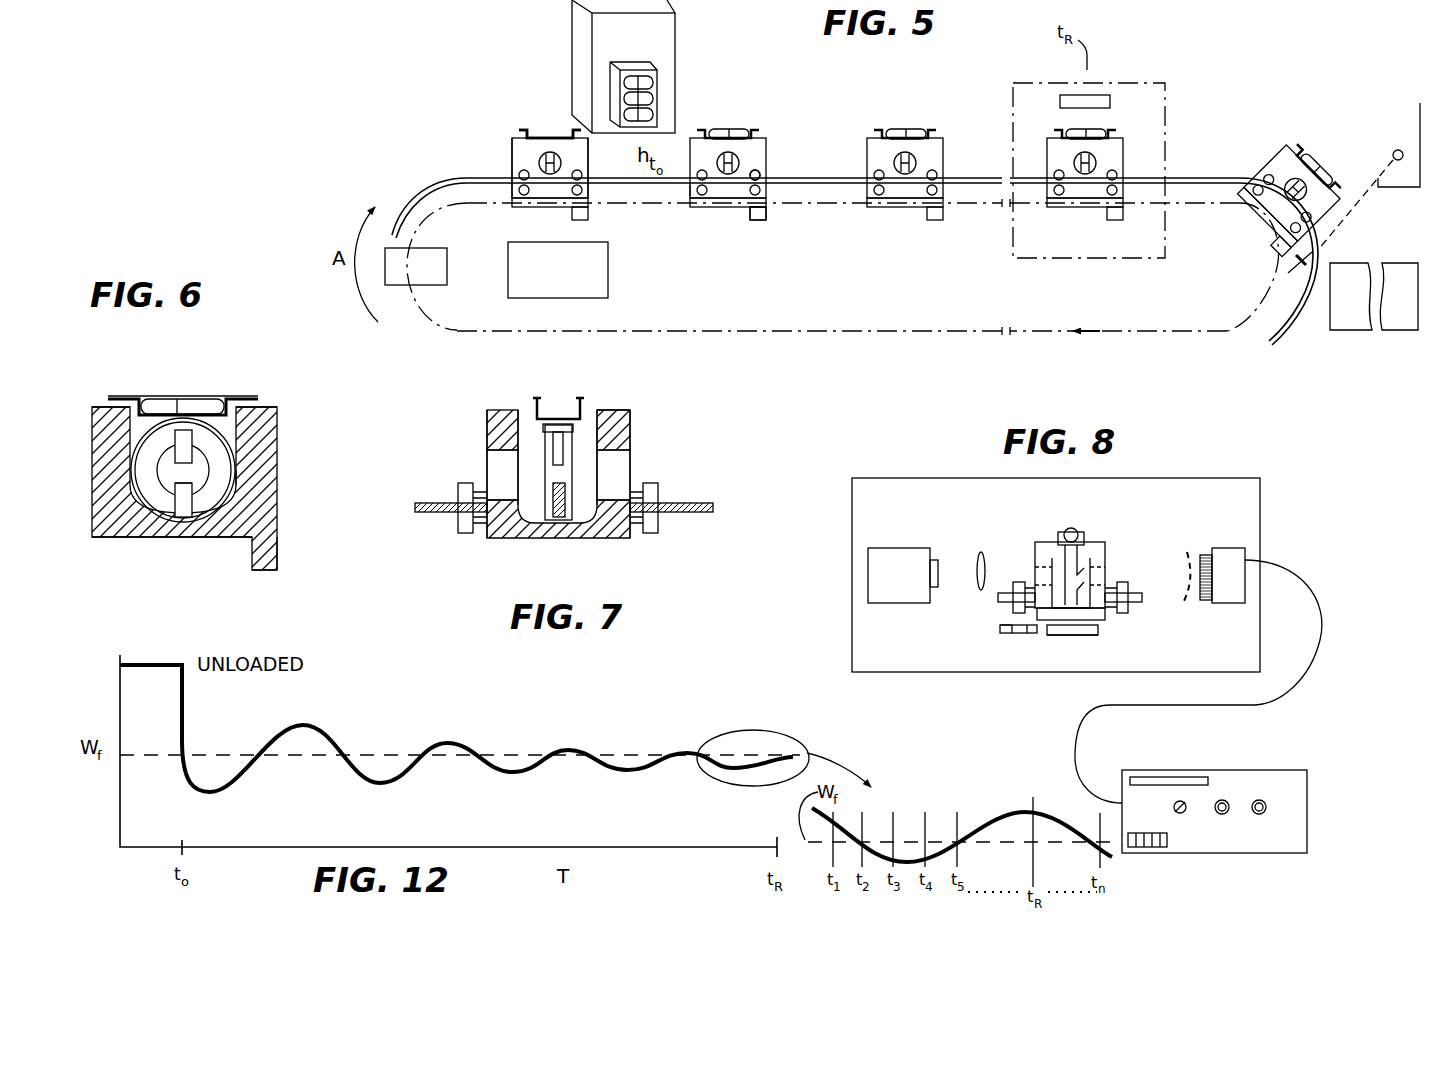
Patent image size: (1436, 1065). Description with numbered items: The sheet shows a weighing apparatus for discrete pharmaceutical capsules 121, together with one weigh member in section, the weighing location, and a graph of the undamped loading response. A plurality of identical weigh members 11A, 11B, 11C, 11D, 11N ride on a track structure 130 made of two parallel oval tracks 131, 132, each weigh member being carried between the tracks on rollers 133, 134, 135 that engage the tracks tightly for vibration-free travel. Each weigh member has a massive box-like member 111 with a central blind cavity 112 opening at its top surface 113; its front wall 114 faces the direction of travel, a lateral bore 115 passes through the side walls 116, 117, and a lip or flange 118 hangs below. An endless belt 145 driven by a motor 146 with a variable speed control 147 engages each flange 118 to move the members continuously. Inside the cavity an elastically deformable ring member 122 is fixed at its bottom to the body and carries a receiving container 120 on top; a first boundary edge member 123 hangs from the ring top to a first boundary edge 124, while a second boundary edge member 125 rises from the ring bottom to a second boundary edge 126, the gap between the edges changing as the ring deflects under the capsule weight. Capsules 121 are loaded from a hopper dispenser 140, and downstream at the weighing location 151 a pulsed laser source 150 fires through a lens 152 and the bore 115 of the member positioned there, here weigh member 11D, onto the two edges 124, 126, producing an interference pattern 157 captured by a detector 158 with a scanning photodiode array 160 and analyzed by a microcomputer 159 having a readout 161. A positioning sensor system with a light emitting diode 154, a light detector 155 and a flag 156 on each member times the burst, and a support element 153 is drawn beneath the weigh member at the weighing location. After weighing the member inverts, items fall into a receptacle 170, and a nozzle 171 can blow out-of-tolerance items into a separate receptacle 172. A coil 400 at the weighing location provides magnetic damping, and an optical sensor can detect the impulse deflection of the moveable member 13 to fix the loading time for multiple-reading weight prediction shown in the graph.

In FIG. 5, the weigh member 11A is at (545, 195).
In FIG. 6, the weigh member 11A is at (92, 538).
In FIG. 7, the weigh member 11A is at (484, 543).
In FIG. 5, the weigh member 11B is at (717, 198).
In FIG. 5, the weigh member 11C is at (897, 197).
In FIG. 5, the weigh member 11D is at (1073, 197).
In FIG. 5, the weigh member 11N is at (1277, 215).
In FIG. 6, the moveable member 13 is at (127, 396).
In FIG. 5, the box-like member 111 is at (511, 145).
In FIG. 6, the box-like member 111 is at (155, 535).
In FIG. 7, the box-like member 111 is at (630, 538).
In FIG. 7, the central blind cavity 112 is at (527, 412).
In FIG. 6, the top surface 113 is at (278, 408).
In FIG. 7, the top surface 113 is at (631, 410).
In FIG. 5, the front wall 114 is at (589, 145).
In FIG. 6, the front wall 114 is at (278, 534).
In FIG. 7, the lateral bore 115 is at (495, 467).
In FIG. 6, the side wall 116 is at (92, 408).
In FIG. 7, the side wall 116 is at (495, 423).
In FIG. 8, the side wall 116 is at (1055, 540).
In FIG. 6, the side wall 117 is at (263, 518).
In FIG. 7, the side wall 117 is at (627, 437).
In FIG. 8, the side wall 117 is at (1098, 542).
In FIG. 5, the lip or flange 118 is at (757, 216).
In FIG. 6, the lip or flange 118 is at (278, 564).
In FIG. 5, the receiving container 120 is at (527, 131).
In FIG. 6, the receiving container 120 is at (254, 398).
In FIG. 7, the receiving container 120 is at (577, 398).
In FIG. 5, the pharmaceutical capsule 121 is at (657, 118).
In FIG. 6, the pharmaceutical capsule 121 is at (217, 399).
In FIG. 6, the elastically deformable ring member 122 is at (237, 492).
In FIG. 7, the elastically deformable ring member 122 is at (565, 470).
In FIG. 6, the first boundary edge member 123 is at (187, 435).
In FIG. 6, the first boundary edge 124 is at (158, 470).
In FIG. 7, the first boundary edge 124 is at (572, 478).
In FIG. 6, the second boundary edge member 125 is at (183, 500).
In FIG. 6, the second boundary edge 126 is at (157, 478).
In FIG. 7, the second boundary edge 126 is at (557, 492).
In FIG. 5, the track structure 130 is at (462, 176).
In FIG. 7, the track 131 is at (706, 513).
In FIG. 8, the track 131 is at (1133, 596).
In FIG. 7, the track 132 is at (430, 503).
In FIG. 8, the track 132 is at (1003, 600).
In FIG. 5, the roller 133 is at (762, 165).
In FIG. 5, the roller 134 is at (689, 192).
In FIG. 7, the roller 134 is at (459, 544).
In FIG. 7, the roller 135 is at (676, 488).
In FIG. 5, the hopper dispenser 140 is at (676, 30).
In FIG. 5, the endless belt 145 is at (743, 330).
In FIG. 5, the motor 146 is at (408, 287).
In FIG. 5, the variable speed control 147 is at (608, 292).
In FIG. 8, the source of electromagnetic radiation 150 is at (910, 594).
In FIG. 5, the weighing location 151 is at (1158, 124).
In FIG. 8, the weighing location 151 is at (1100, 509).
In FIG. 8, the lens 152 is at (978, 553).
In FIG. 8, the support 153 is at (1068, 648).
In FIG. 8, the light emitting diode 154 is at (1012, 634).
In FIG. 8, the light detector 155 is at (1098, 635).
In FIG. 8, the flag or arm 156 is at (1038, 621).
In FIG. 8, the interference pattern 157 is at (1184, 603).
In FIG. 8, the detector 158 is at (1218, 604).
In FIG. 8, the microcomputer 159 is at (1307, 853).
In FIG. 8, the scanning photodiode array 160 is at (1203, 555).
In FIG. 8, the readout 161 is at (1208, 781).
In FIG. 5, the receptacle 170 is at (1353, 325).
In FIG. 5, the nozzle 171 is at (1293, 273).
In FIG. 5, the separate receptacle 172 is at (1419, 135).
In FIG. 5, the coil 400 is at (1108, 97).